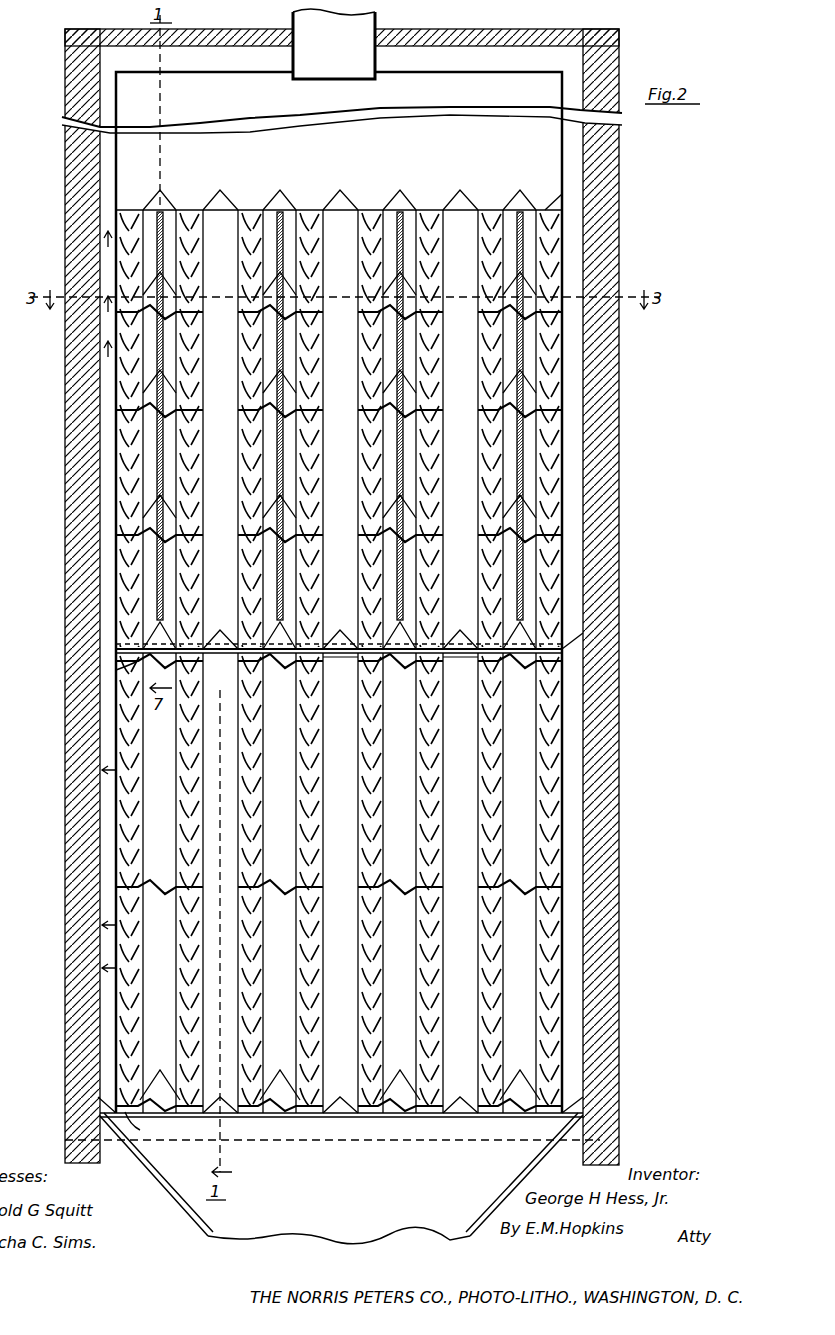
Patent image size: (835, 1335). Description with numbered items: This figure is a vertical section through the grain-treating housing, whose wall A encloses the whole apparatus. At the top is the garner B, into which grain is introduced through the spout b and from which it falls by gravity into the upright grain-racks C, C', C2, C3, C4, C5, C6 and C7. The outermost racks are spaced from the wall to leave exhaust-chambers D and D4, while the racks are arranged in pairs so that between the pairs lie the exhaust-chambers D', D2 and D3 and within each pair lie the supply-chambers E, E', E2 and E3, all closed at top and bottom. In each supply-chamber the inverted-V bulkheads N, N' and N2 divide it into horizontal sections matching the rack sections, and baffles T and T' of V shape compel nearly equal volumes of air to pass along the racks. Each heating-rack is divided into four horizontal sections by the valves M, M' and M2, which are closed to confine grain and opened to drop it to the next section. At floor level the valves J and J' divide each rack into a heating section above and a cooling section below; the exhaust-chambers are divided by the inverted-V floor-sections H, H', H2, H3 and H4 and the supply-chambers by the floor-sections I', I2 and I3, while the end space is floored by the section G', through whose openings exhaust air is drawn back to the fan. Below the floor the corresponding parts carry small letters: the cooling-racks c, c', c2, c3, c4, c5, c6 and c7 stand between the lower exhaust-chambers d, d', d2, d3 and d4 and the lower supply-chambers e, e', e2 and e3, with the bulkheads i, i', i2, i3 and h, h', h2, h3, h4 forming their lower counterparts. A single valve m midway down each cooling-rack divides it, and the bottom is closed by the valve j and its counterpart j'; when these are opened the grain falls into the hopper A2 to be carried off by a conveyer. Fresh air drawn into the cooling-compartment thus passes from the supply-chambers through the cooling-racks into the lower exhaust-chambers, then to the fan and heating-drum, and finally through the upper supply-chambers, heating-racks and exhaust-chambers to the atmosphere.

The housing wall A is at (650, 440).
The hopper A2 is at (332, 1178).
The garner B is at (339, 141).
The spout b is at (334, 44).
The grain-rack C is at (149, 199).
The grain-rack C' is at (210, 199).
The grain-rack C2 is at (269, 199).
The grain-rack C3 is at (330, 199).
The grain-rack C4 is at (389, 199).
The grain-rack C5 is at (450, 199).
The grain-rack C6 is at (509, 199).
The grain-rack C7 is at (550, 199).
The cooling-rack c is at (129, 661).
The cooling-rack c' is at (189, 661).
The cooling-rack c2 is at (250, 661).
The cooling-rack c3 is at (309, 661).
The cooling-rack c4 is at (370, 661).
The cooling-rack c5 is at (429, 661).
The cooling-rack c6 is at (490, 661).
The cooling-rack c7 is at (549, 661).
The exhaust-chamber D is at (70, 580).
The exhaust-chamber D' is at (221, 430).
The exhaust-chamber D2 is at (341, 430).
The exhaust-chamber D3 is at (461, 430).
The exhaust-chamber D4 is at (559, 430).
The supply-chamber E is at (160, 430).
The supply-chamber E' is at (280, 430).
The supply-chamber E2 is at (400, 430).
The supply-chamber E3 is at (520, 430).
The baffle T is at (370, 416).
The baffle T' is at (363, 416).
The bulkhead N is at (339, 277).
The bulkhead N' is at (339, 374).
The bulkhead N2 is at (165, 508).
The valve M is at (295, 324).
The valve M' is at (294, 416).
The valve M2 is at (120, 538).
The floor-section H is at (329, 634).
The floor-section H' is at (220, 631).
The floor-section H2 is at (340, 631).
The floor-section H3 is at (460, 631).
The floor-section H4 is at (572, 631).
The floor-section I' is at (219, 635).
The floor-section I2 is at (399, 635).
The floor-section I3 is at (519, 635).
The valve J is at (81, 684).
The valve J' is at (339, 674).
The floor-section G' is at (400, 677).
The exhaust-chamber d is at (111, 883).
The exhaust-chamber d' is at (220, 931).
The exhaust-chamber d2 is at (341, 883).
The exhaust-chamber d3 is at (461, 883).
The exhaust-chamber d4 is at (558, 883).
The supply-chamber e is at (160, 883).
The supply-chamber e' is at (280, 883).
The supply-chamber e2 is at (400, 883).
The supply-chamber e3 is at (520, 883).
The valve m is at (128, 890).
The floor-section i is at (160, 1074).
The floor-section i' is at (280, 1074).
The floor-section i2 is at (400, 1075).
The floor-section i3 is at (520, 1074).
The floor-section h is at (340, 1098).
The floor-section h' is at (220, 1096).
The floor-section h2 is at (340, 1093).
The floor-section h3 is at (460, 1093).
The floor-section h4 is at (572, 1088).
The valve j is at (141, 1140).
The valve j' is at (339, 1123).